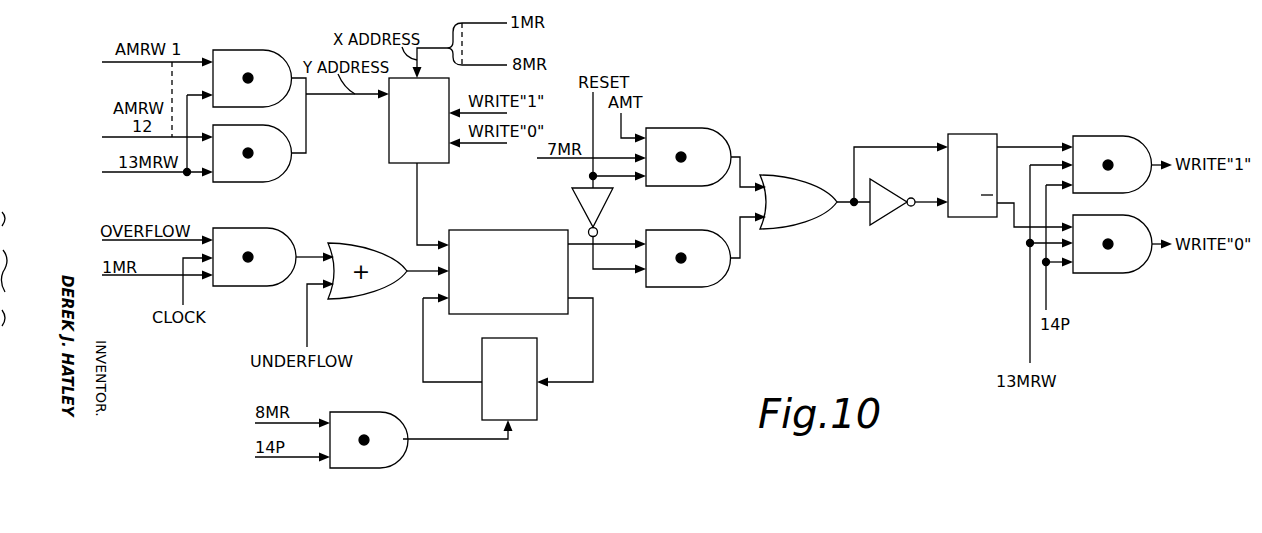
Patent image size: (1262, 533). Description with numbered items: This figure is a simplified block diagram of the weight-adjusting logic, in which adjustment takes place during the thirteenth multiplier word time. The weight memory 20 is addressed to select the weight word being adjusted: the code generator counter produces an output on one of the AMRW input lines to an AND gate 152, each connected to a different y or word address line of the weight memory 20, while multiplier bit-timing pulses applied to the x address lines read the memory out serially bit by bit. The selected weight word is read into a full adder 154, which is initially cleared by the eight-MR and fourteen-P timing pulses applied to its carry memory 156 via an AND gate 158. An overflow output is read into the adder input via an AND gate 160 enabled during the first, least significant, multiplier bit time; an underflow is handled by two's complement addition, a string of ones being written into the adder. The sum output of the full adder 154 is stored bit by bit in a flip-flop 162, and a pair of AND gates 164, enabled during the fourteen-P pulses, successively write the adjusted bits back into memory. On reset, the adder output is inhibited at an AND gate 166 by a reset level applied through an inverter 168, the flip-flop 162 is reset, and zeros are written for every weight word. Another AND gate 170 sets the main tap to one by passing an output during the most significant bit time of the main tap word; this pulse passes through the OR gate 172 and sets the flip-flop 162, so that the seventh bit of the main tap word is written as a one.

The AND gate 152 is at (275, 34).
The weight memory 20 is at (389, 132).
The full adder 154 is at (523, 215).
The carry memory 156 is at (538, 399).
The AND gate 158 is at (396, 419).
The AND gate 160 is at (274, 228).
The flip-flop 162 is at (971, 218).
The pair of AND gates 164 is at (1120, 124).
The AND gate 166 is at (702, 284).
The inverter 168 is at (605, 202).
The AND gate 170 is at (707, 129).
The OR gate 172 is at (810, 225).